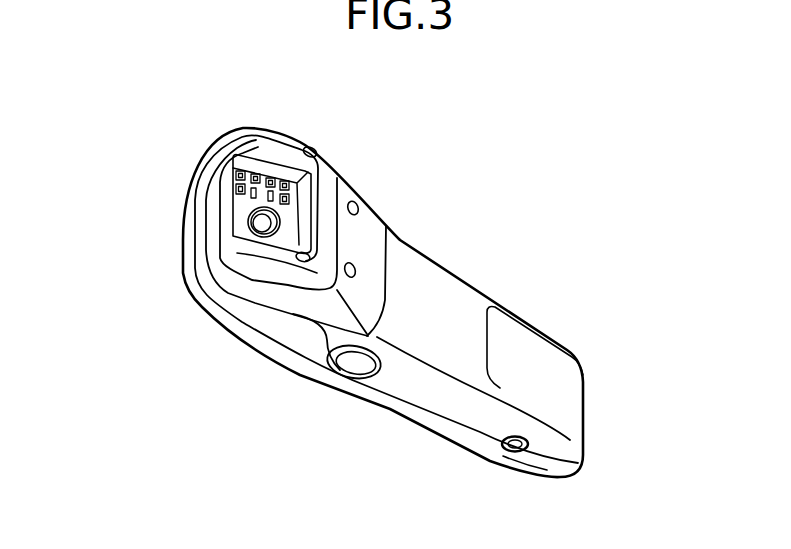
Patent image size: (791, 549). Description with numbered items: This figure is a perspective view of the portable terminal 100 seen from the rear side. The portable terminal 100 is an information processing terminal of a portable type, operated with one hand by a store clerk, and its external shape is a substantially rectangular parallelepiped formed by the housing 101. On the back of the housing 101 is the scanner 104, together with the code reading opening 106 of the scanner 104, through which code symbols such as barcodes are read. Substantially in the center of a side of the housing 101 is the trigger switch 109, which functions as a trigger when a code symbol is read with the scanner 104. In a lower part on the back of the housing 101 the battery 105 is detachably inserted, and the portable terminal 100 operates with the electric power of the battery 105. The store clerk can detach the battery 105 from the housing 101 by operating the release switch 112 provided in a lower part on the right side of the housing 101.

The portable terminal 100 is at (280, 362).
The housing 101 is at (187, 303).
The scanner 104 is at (247, 220).
The battery 105 is at (573, 387).
The code reading opening 106 is at (266, 148).
The trigger switch 109 is at (355, 365).
The release switch 112 is at (512, 452).